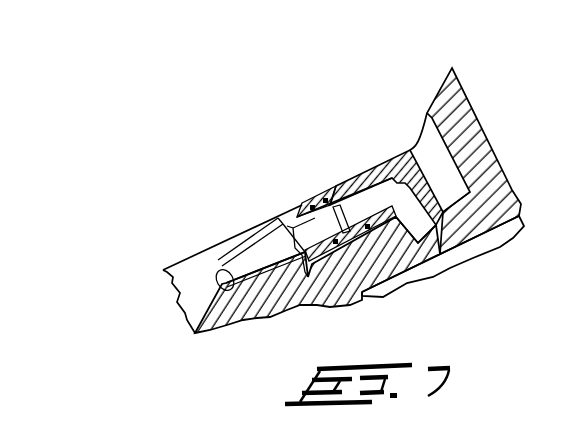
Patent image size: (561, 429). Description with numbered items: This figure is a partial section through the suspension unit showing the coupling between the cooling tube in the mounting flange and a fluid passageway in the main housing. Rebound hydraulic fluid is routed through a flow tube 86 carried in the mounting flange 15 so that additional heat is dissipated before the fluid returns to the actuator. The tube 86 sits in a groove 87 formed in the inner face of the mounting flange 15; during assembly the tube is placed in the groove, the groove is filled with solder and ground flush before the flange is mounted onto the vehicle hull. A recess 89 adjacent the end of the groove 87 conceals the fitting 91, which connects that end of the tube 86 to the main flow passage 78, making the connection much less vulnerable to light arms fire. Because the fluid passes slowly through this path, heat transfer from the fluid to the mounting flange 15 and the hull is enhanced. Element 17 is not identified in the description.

The mounting flange 15 is at (238, 315).
The wall 17 is at (462, 102).
The main flow passage 78 is at (450, 263).
The flow tube 86 is at (255, 248).
The groove 87 is at (187, 272).
The recess 89 is at (420, 140).
The fitting 91 is at (325, 180).